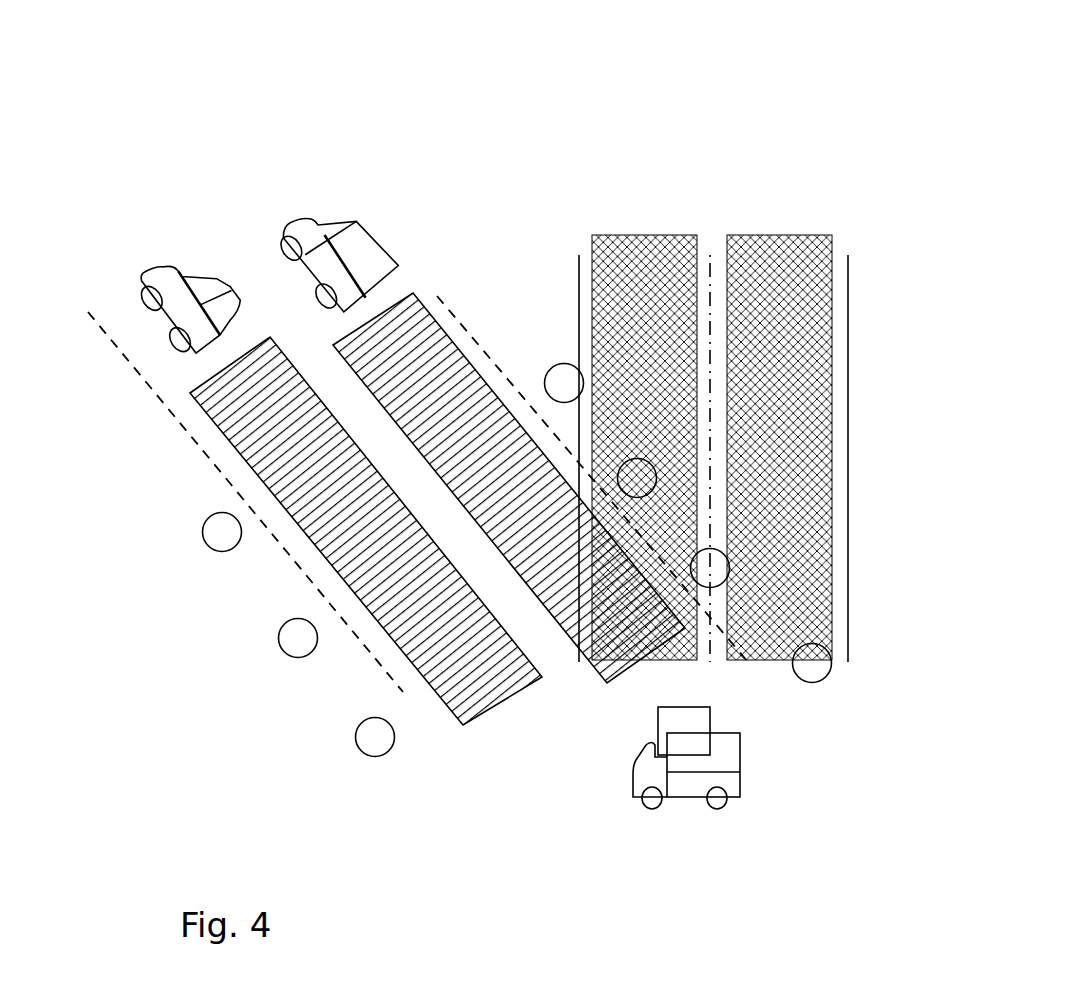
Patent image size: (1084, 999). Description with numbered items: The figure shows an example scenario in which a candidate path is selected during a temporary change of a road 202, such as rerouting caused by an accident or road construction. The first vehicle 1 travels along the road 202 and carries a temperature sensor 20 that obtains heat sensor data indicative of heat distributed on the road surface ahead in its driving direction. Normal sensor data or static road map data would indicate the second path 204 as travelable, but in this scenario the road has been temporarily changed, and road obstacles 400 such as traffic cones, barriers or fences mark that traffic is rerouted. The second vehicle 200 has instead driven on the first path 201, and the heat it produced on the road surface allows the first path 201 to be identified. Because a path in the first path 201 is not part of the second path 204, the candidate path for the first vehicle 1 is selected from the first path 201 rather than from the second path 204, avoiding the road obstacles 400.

The first vehicle 1 is at (643, 796).
The temperature sensor 20 is at (698, 746).
The second vehicle 200 is at (258, 225).
The first path 201 is at (366, 320).
The road 202 is at (435, 190).
The second path 204 is at (658, 347).
The road obstacles 400 is at (586, 383).